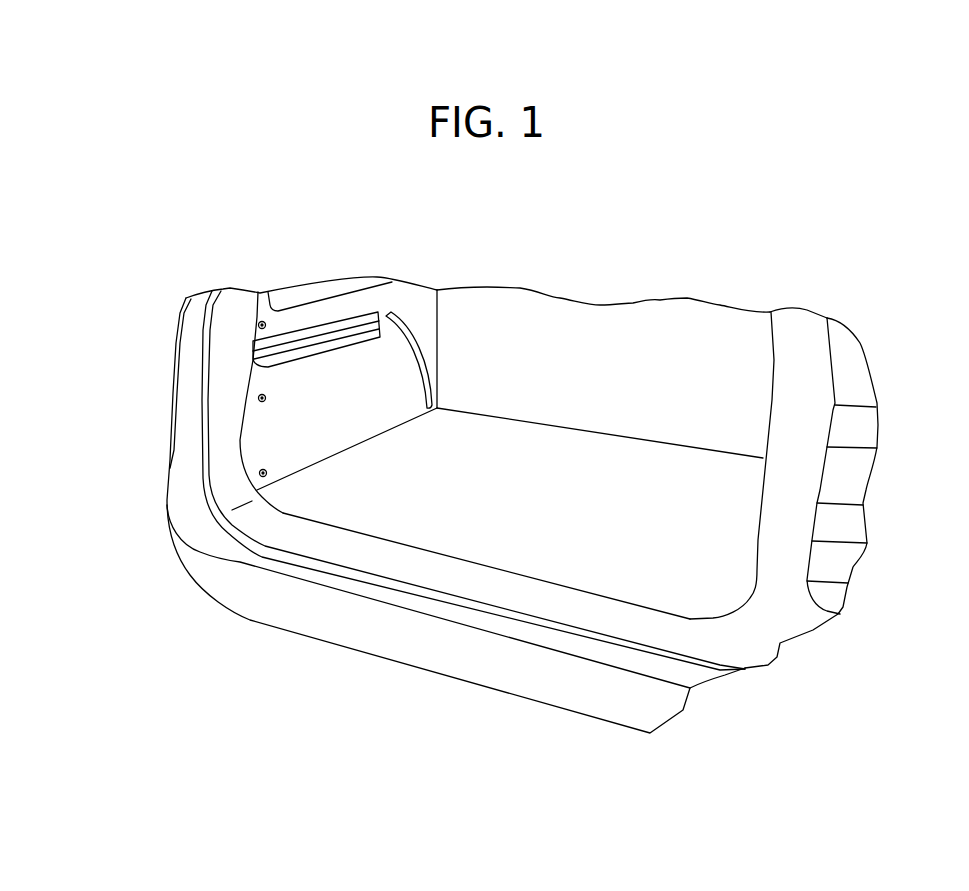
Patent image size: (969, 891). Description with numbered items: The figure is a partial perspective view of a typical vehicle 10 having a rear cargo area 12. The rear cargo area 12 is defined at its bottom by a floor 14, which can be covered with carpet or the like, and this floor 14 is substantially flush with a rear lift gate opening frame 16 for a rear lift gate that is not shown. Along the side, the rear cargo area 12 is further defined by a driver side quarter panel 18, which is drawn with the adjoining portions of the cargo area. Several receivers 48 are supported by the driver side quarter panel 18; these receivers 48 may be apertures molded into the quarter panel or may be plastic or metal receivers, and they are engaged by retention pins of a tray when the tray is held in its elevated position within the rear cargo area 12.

The vehicle 10 is at (134, 513).
The rear cargo area 12 is at (657, 336).
The floor 14 is at (589, 519).
The rear lift gate opening frame 16 is at (217, 507).
The driver side quarter panel 18 is at (357, 411).
The receivers 48 is at (258, 323).